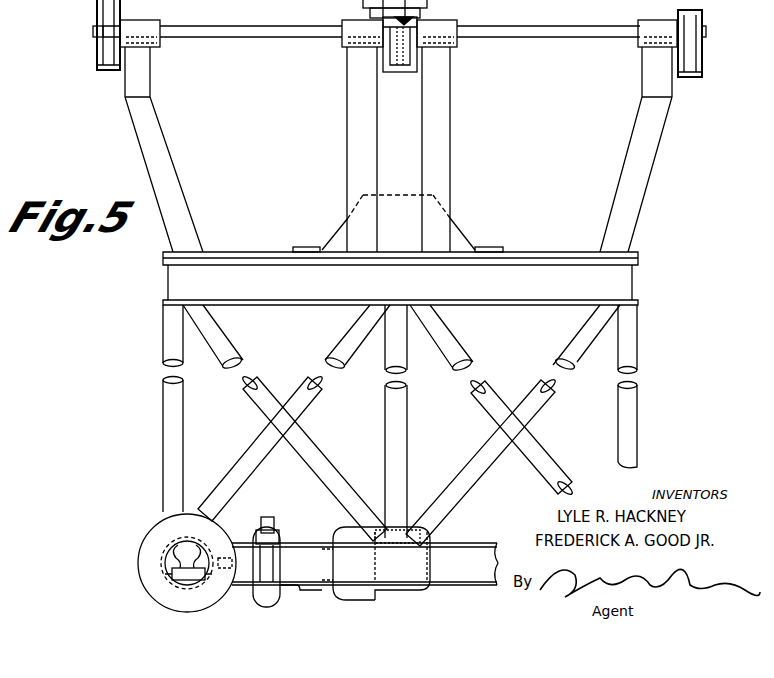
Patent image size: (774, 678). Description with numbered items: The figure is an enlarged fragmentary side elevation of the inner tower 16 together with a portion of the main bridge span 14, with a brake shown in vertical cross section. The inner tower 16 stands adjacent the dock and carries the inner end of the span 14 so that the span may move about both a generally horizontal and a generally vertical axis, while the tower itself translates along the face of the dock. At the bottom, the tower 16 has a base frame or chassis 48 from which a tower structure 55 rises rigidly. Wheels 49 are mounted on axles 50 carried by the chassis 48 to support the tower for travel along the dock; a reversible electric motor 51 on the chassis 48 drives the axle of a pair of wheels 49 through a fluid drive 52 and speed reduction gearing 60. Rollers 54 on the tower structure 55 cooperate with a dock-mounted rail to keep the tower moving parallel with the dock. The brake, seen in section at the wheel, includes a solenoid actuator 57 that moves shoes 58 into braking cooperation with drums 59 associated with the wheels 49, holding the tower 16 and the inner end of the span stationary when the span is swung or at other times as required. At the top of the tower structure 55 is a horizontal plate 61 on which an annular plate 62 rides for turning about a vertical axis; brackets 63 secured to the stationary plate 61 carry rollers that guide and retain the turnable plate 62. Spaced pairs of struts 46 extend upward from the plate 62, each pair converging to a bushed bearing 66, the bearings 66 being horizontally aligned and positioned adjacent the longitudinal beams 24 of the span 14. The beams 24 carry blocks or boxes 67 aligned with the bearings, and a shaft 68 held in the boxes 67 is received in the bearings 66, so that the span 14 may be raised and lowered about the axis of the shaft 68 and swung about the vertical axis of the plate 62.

The main bridge span 14 is at (702, 12).
The inner tower 16 is at (160, 423).
The longitudinal beams 24 is at (122, 13).
The struts 46 is at (165, 131).
The base frame or chassis 48 is at (483, 543).
The wheels 49 is at (155, 530).
The axles 50 is at (485, 9).
The reversible electric motor 51 is at (420, 592).
The fluid drive 52 is at (257, 590).
The rollers 54 is at (273, 527).
The tower structure 55 is at (487, 400).
The solenoid actuator 57 is at (172, 578).
The shoes 58 is at (173, 555).
The drums 59 is at (200, 542).
The speed reduction gearing 60 is at (294, 592).
The horizontal plate 61 is at (635, 262).
The annular plate 62 is at (553, 257).
The brackets 63 is at (493, 250).
The bushed bearings 66 is at (143, 32).
The blocks or boxes 67 is at (93, 53).
The shaft 68 is at (300, 33).